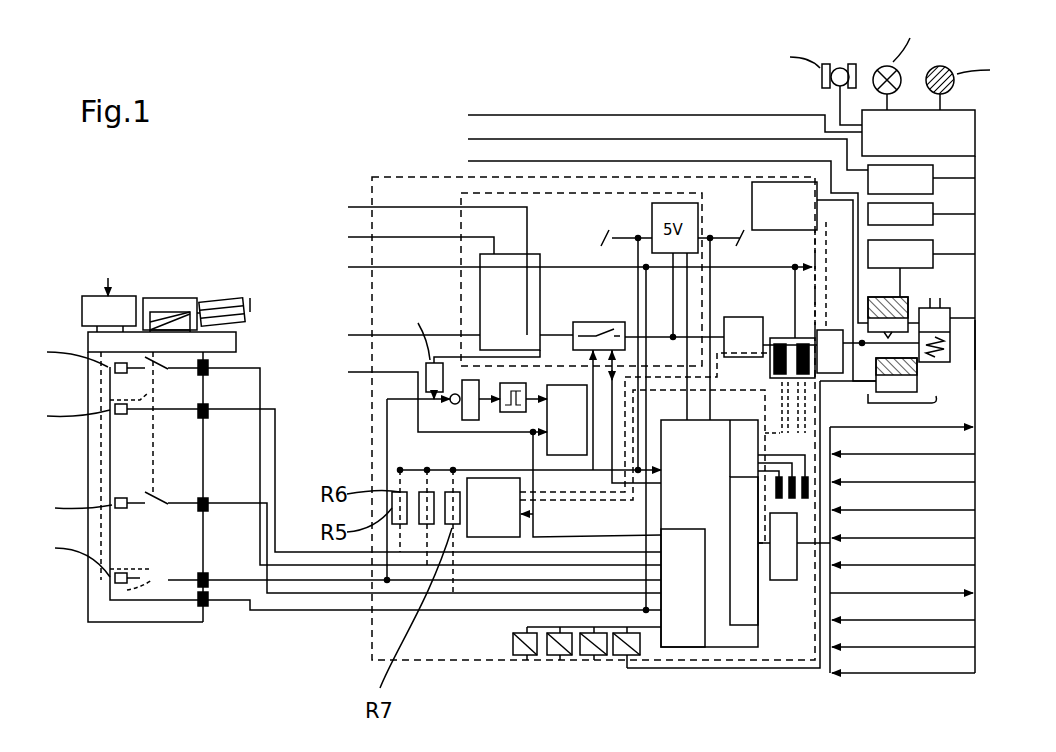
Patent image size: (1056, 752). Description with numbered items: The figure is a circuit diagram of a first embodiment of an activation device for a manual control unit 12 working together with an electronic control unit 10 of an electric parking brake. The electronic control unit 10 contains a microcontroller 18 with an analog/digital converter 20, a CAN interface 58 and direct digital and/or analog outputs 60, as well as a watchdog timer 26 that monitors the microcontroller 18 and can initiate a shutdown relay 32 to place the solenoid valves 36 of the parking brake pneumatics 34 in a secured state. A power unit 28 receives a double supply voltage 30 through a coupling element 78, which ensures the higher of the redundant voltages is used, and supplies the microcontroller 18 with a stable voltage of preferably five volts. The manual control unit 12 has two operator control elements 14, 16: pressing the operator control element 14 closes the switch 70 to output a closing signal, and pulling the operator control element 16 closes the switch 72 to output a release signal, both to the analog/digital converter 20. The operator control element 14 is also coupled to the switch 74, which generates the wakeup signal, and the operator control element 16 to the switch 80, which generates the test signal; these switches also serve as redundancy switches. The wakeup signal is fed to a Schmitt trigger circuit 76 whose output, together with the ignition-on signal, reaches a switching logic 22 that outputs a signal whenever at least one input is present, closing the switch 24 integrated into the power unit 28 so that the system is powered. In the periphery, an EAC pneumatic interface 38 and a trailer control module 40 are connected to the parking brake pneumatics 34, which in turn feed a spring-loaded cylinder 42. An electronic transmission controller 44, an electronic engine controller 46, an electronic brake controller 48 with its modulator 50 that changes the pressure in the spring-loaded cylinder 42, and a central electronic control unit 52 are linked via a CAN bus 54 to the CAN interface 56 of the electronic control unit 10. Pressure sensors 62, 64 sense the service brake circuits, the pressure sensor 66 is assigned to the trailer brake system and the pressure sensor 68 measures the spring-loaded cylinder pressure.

The electronic control unit 10 is at (425, 660).
The manual control unit 12 is at (105, 622).
The operator control element 14 is at (82, 308).
The operator control element 16 is at (222, 300).
The microcontroller 18 is at (730, 647).
The analog/digital converter 20 is at (683, 647).
The switching logic 22 is at (581, 422).
The switch 24 is at (604, 322).
The watchdog timer 26 is at (618, 448).
The power unit 28 is at (460, 280).
The double supply voltage 30 is at (340, 197).
The shutdown relay 32 is at (745, 317).
The parking brake pneumatics 34 is at (773, 499).
The solenoid valves 36 is at (770, 365).
The EAC pneumatic interface 38 is at (814, 281).
The trailer control module 40 is at (917, 382).
The spring-loaded cylinder 42 is at (950, 320).
The electronic transmission controller 44 is at (960, 168).
The electronic engine controller 46 is at (937, 208).
The electronic brake controller 48 is at (937, 248).
The modulator 50 is at (908, 310).
The central electronic control unit 52 is at (889, 85).
The CAN bus 54 is at (975, 346).
The CAN interface 56 is at (783, 582).
The CAN interface 58 is at (750, 615).
The digital and/or analog outputs 60 is at (735, 450).
The pressure sensor 62 is at (514, 660).
The pressure sensor 64 is at (548, 660).
The pressure sensor 66 is at (585, 660).
The pressure sensor 68 is at (620, 660).
The switch 70 is at (135, 416).
The switch 72 is at (155, 372).
The switch 74 is at (150, 581).
The Schmitt trigger circuit 76 is at (495, 422).
The coupling element 78 is at (540, 258).
The switch 80 is at (140, 495).